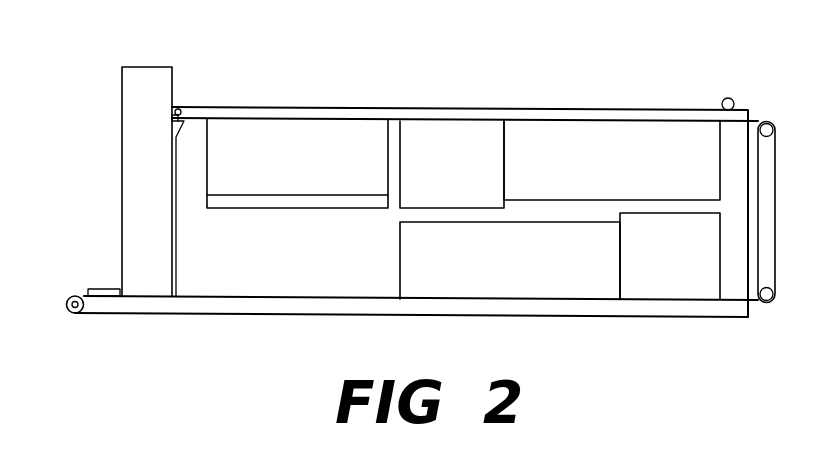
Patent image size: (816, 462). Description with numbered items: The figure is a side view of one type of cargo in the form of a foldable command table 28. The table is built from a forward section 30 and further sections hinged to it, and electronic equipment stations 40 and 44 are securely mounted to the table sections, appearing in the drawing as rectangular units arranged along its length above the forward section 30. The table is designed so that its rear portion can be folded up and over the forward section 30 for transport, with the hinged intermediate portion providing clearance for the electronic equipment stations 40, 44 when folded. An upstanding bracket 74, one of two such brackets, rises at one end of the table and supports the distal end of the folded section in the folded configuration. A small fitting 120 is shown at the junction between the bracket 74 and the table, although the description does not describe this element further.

The foldable command table 28 is at (438, 84).
The forward section 30 is at (533, 308).
The electronic equipment station 40 is at (308, 168).
The electronic equipment station 44 is at (460, 173).
The upstanding bracket 74 is at (140, 226).
The pivot hinge 120 is at (180, 127).